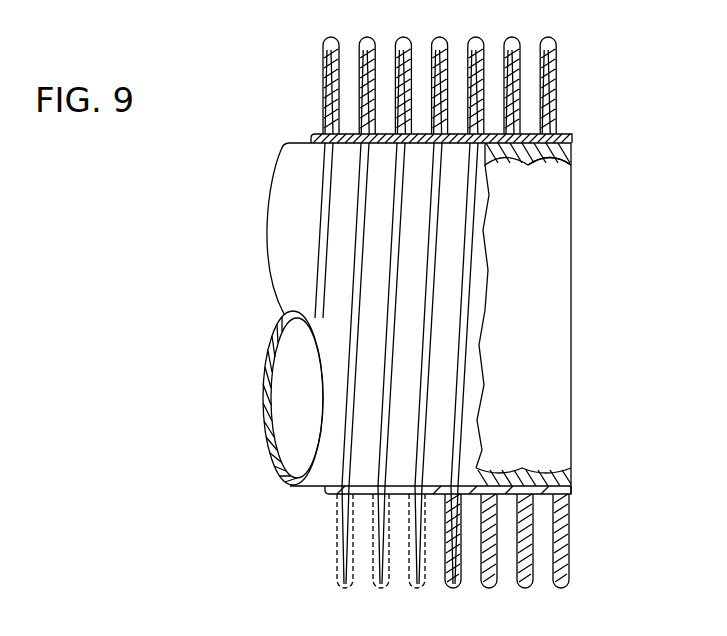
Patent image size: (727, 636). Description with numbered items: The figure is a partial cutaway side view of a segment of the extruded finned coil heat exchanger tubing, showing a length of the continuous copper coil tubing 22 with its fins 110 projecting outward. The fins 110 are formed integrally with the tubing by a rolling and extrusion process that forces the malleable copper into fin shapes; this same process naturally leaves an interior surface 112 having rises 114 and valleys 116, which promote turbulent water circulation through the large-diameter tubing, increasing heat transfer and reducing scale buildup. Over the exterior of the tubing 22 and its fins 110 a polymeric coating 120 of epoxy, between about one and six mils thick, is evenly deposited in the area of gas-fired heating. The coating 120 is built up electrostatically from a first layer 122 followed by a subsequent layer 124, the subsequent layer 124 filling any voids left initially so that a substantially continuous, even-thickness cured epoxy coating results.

The continuous coil tubing 22 is at (267, 388).
The fins 110 is at (571, 530).
The interior surface 112 is at (546, 356).
The rises 114 is at (530, 165).
The valleys 116 is at (548, 160).
The polymeric coating 120 is at (311, 133).
The first layer 122 is at (338, 540).
The subsequent layer 124 is at (338, 570).